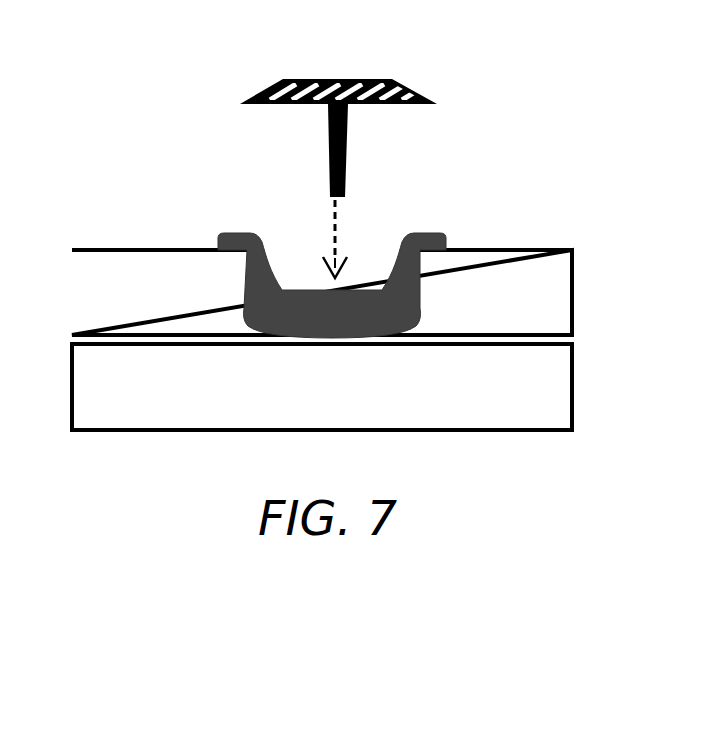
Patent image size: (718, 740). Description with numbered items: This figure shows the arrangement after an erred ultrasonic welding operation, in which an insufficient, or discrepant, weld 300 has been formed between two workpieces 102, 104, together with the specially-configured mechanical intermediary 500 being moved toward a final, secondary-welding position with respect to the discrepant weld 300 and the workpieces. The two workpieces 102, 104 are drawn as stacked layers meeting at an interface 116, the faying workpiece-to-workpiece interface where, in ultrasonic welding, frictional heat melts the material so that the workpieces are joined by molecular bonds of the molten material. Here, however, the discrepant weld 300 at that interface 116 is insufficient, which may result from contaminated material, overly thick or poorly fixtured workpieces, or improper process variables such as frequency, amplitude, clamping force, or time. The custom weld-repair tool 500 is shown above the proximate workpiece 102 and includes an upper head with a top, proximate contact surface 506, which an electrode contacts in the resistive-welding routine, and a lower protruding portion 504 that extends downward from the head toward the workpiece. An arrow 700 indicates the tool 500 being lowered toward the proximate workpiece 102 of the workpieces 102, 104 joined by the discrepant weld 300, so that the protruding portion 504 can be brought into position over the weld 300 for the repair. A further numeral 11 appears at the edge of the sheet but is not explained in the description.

The proximate workpiece 102 is at (178, 322).
The workpiece 104 is at (465, 417).
The interface 116 is at (592, 358).
The discrepant weld 300 is at (338, 333).
The specially-configured mechanical intermediary 500 is at (437, 28).
The protruding portion 504 is at (348, 120).
The proximate contact surface 506 is at (300, 79).
The arrow 700 is at (328, 241).
The structure 11 is at (702, 38).